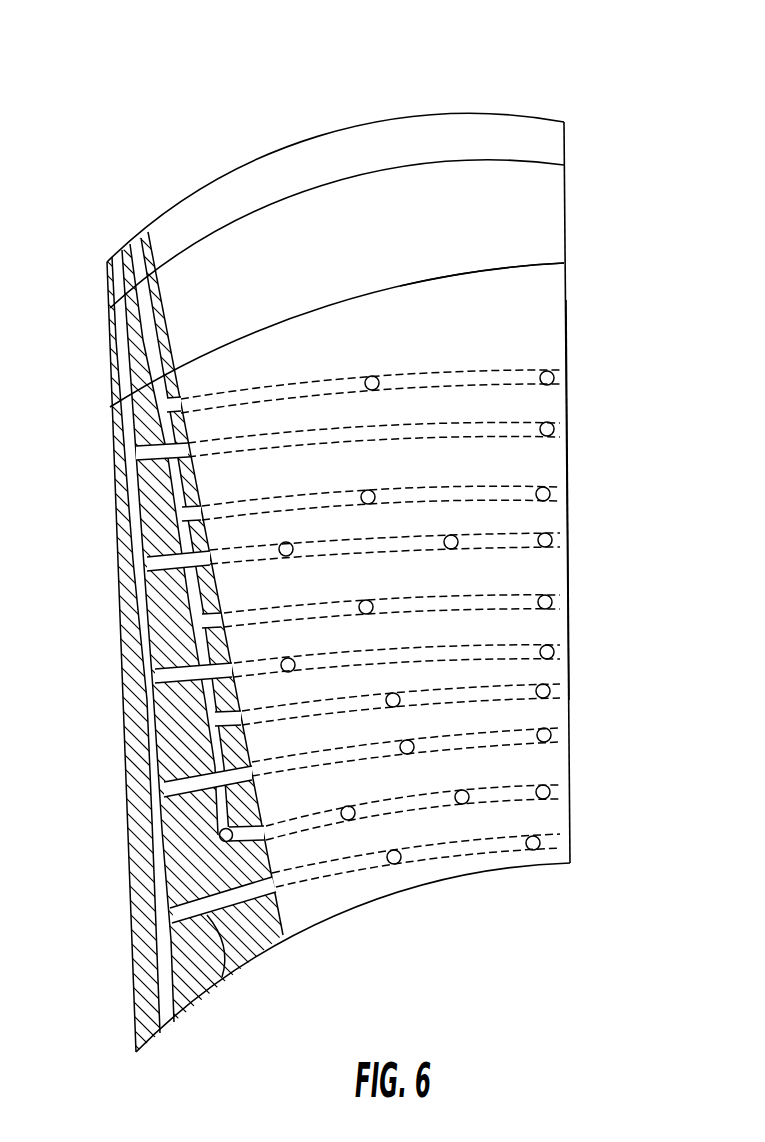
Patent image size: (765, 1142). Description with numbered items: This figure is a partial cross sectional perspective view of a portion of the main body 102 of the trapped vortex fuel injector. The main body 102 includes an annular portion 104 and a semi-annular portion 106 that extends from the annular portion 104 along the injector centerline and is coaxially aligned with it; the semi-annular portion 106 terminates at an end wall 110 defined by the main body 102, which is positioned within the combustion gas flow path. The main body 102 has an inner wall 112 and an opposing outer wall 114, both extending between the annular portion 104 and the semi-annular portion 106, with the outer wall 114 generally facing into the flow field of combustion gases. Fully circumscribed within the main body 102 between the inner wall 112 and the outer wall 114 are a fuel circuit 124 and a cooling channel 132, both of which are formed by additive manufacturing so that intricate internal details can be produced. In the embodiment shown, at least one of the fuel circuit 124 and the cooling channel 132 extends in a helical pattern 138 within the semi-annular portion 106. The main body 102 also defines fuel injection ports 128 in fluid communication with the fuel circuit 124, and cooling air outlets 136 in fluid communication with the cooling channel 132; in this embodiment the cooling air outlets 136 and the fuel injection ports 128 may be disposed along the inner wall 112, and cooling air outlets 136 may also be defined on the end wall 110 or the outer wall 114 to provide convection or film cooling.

The main body 102 is at (580, 100).
The annular portion 104 is at (574, 207).
The semi-annular portion 106 is at (587, 391).
The end wall 110 is at (331, 950).
The inner wall 112 is at (397, 288).
The outer wall 114 is at (118, 630).
The fuel circuit 124 is at (160, 325).
The fuel injection port 128 is at (555, 652).
The cooling channel 132 is at (124, 328).
The cooling air outlet 136 is at (395, 864).
The helical pattern 138 is at (544, 304).